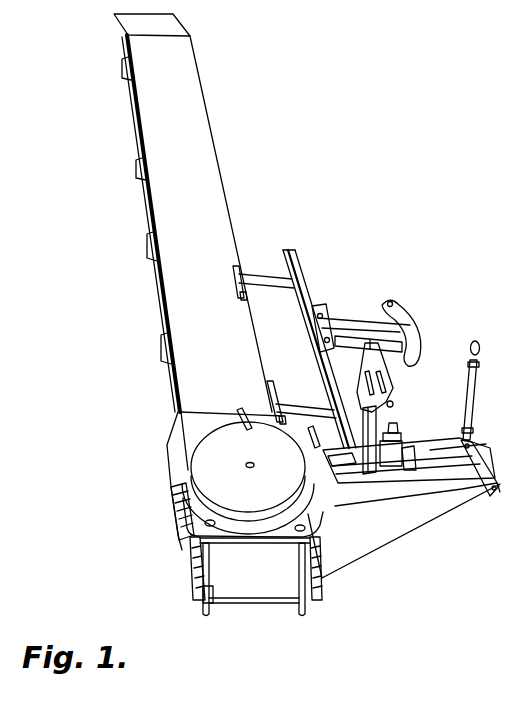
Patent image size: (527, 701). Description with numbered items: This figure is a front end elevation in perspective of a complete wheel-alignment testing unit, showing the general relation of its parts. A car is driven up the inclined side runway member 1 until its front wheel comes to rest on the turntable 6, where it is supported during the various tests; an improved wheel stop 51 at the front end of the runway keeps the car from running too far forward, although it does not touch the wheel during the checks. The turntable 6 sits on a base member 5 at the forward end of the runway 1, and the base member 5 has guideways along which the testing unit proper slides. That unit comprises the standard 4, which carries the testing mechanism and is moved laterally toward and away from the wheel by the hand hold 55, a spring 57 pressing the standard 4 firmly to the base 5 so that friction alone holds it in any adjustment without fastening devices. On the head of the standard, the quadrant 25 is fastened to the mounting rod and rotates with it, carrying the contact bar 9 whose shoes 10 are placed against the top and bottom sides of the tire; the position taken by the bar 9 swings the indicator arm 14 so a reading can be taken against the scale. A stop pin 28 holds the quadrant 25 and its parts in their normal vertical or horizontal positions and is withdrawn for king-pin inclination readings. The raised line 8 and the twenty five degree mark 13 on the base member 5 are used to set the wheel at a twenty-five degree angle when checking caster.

The side runway member 1 is at (178, 209).
The standard 4 is at (383, 418).
The base member 5 is at (375, 530).
The turntable 6 is at (225, 444).
The raised line 8 is at (327, 502).
The contact bar 9 is at (307, 306).
The shoe 10 is at (261, 275).
The twenty five degree mark 13 is at (310, 432).
The indicator arm 14 is at (358, 326).
The quadrant 25 is at (389, 382).
The stop pin 28 is at (394, 404).
The wheel stop 51 is at (227, 538).
The hand hold 55 is at (474, 406).
The spring 57 is at (404, 438).